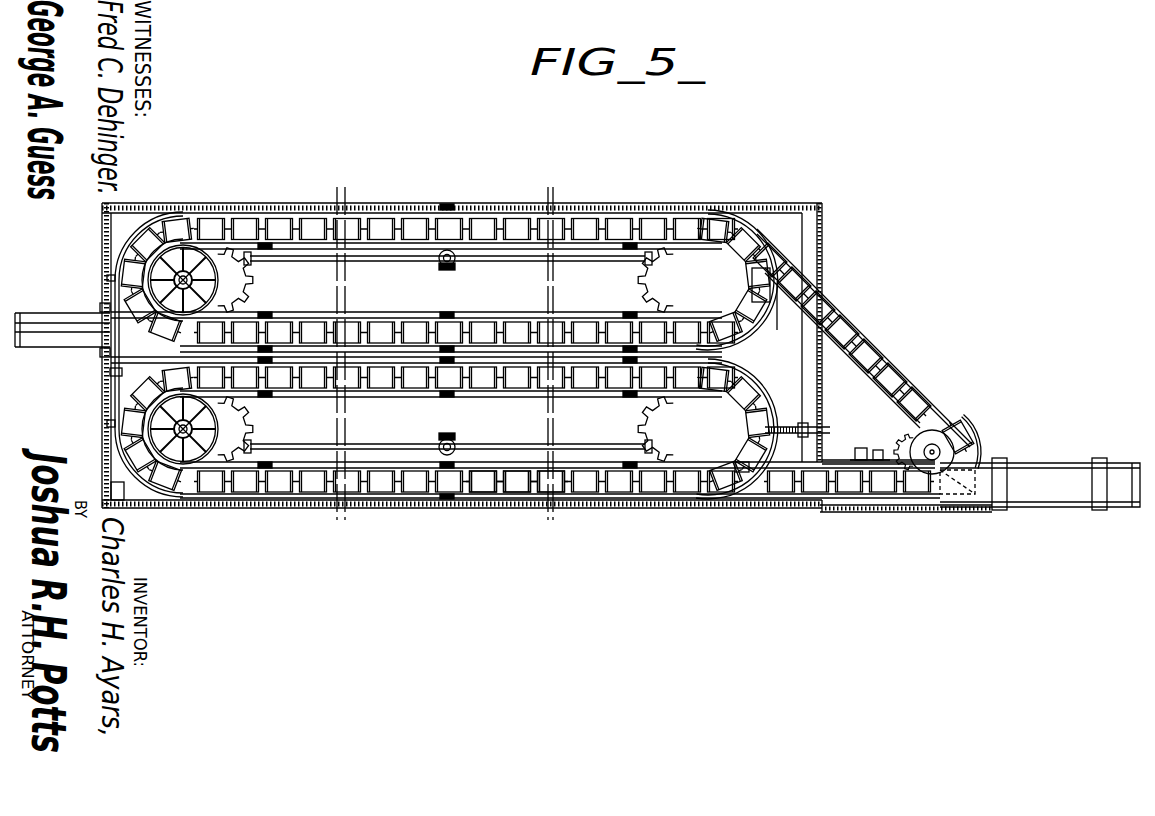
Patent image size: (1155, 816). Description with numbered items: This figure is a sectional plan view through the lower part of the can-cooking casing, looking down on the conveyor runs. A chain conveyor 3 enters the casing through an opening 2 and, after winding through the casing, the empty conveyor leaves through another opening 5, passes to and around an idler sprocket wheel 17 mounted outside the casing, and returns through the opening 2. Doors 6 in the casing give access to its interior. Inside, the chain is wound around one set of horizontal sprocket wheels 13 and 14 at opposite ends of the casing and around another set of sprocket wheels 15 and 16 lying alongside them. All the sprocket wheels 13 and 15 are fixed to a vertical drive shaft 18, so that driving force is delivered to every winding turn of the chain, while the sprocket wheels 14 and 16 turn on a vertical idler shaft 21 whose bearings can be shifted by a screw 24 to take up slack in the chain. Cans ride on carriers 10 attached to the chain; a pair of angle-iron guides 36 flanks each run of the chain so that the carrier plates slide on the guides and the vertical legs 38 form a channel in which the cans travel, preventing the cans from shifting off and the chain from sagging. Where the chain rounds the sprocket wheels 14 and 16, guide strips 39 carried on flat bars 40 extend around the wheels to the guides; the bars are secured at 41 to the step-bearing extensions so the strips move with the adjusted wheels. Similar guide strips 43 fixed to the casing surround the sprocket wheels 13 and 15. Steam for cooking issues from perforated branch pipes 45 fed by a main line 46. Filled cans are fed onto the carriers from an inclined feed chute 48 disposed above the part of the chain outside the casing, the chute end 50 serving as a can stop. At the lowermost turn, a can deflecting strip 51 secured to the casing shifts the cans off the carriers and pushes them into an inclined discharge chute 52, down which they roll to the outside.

The opening 2 is at (832, 503).
The chain conveyor 3 is at (886, 486).
The opening 5 is at (822, 290).
The doors 6 is at (222, 205).
The carrier 10 is at (483, 492).
The sprocket wheels 13 is at (238, 423).
The sprocket wheels 14 is at (660, 432).
The sprocket wheels 15 is at (243, 291).
The sprocket wheels 16 is at (657, 278).
The idler sprocket wheel 17 is at (933, 430).
The drive shaft 18 is at (183, 271).
The idler shaft 21 is at (750, 205).
The screw 24 is at (830, 443).
The guides 36 is at (111, 449).
The vertical legs 38 is at (614, 216).
The guide strips 39 is at (822, 232).
The flat bars 40 is at (778, 303).
The securing point 41 is at (117, 321).
The guide strips 43 is at (130, 371).
The perforated branch pipes 45 is at (497, 254).
The main line 46 is at (440, 253).
The inclined feed chute 48 is at (1015, 507).
The end of the chute 50 is at (943, 509).
The can deflecting strip 51 is at (117, 300).
The inclined discharge chute 52 is at (83, 343).